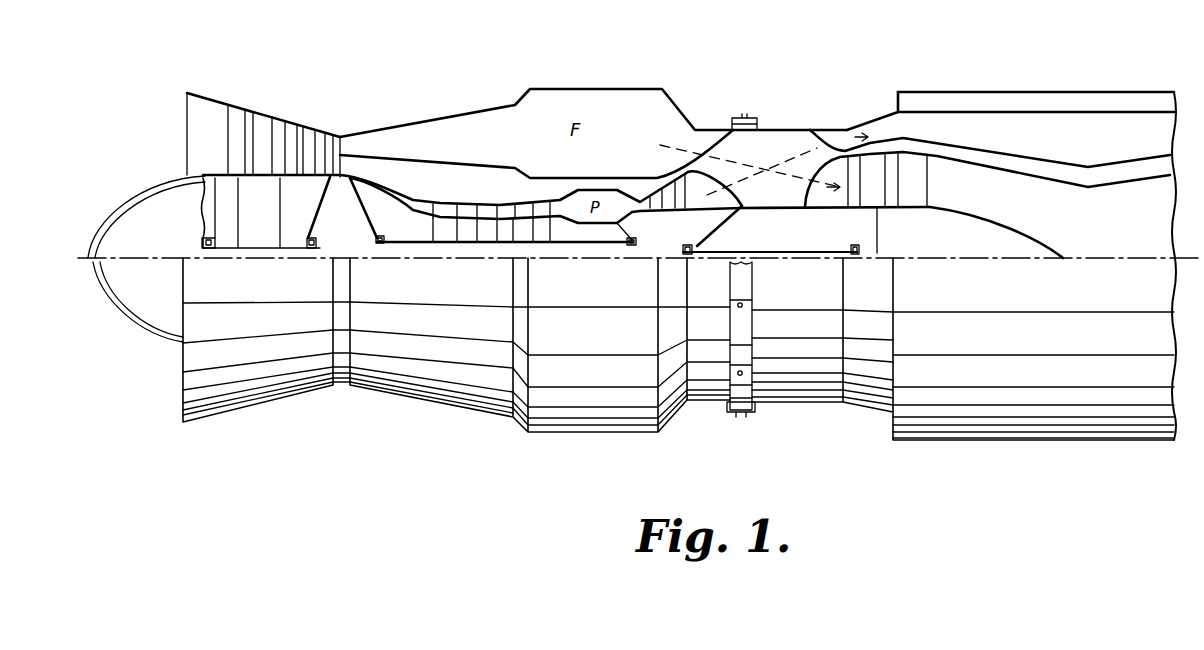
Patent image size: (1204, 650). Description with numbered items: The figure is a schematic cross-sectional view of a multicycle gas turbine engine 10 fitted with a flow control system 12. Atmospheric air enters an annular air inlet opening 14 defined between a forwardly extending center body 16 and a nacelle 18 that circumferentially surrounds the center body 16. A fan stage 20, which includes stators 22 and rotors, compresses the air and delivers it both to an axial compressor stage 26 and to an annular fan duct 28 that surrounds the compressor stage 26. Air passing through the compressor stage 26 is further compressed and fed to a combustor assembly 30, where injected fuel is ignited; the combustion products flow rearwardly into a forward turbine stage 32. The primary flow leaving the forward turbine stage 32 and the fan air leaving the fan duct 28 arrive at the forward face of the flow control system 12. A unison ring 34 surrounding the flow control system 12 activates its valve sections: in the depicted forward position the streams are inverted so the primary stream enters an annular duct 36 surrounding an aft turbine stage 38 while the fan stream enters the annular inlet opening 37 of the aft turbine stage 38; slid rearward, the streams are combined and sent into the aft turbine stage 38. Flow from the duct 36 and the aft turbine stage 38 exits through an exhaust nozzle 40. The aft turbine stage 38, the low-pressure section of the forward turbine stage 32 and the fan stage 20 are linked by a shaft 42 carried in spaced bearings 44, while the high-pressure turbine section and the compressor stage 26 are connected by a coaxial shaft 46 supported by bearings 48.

The gas turbine engine 10 is at (461, 410).
The flow control system 12 is at (789, 150).
The annular air inlet opening 14 is at (190, 131).
The center body 16 is at (122, 305).
The nacelle 18 is at (218, 92).
The fan stage 20 is at (273, 128).
The stators 22 is at (238, 118).
The axial compressor stage 26 is at (466, 244).
The annular fan duct 28 is at (470, 118).
The combustor assembly 30 is at (612, 188).
The forward turbine stage 32 is at (672, 150).
The unison ring 34 is at (752, 118).
The annular duct 36 is at (886, 128).
The annular inlet opening 37 is at (840, 185).
The aft turbine stage 38 is at (890, 196).
The exhaust nozzle 40 is at (1030, 111).
The shaft 42 is at (572, 259).
The bearings 44 is at (215, 258).
The shaft 46 is at (503, 248).
The bearings 48 is at (379, 252).